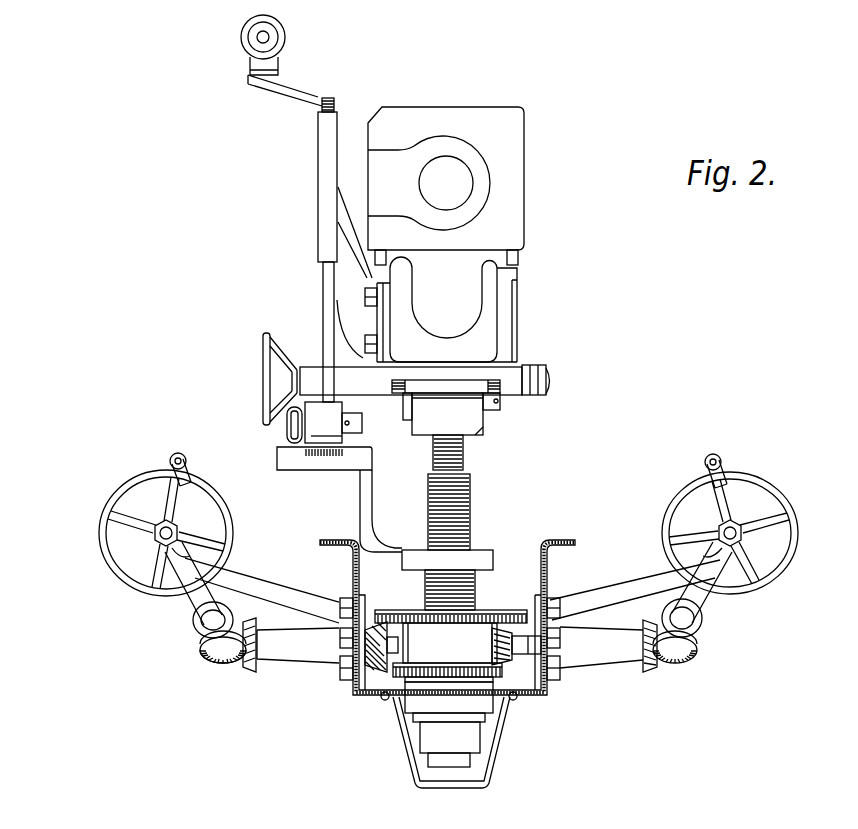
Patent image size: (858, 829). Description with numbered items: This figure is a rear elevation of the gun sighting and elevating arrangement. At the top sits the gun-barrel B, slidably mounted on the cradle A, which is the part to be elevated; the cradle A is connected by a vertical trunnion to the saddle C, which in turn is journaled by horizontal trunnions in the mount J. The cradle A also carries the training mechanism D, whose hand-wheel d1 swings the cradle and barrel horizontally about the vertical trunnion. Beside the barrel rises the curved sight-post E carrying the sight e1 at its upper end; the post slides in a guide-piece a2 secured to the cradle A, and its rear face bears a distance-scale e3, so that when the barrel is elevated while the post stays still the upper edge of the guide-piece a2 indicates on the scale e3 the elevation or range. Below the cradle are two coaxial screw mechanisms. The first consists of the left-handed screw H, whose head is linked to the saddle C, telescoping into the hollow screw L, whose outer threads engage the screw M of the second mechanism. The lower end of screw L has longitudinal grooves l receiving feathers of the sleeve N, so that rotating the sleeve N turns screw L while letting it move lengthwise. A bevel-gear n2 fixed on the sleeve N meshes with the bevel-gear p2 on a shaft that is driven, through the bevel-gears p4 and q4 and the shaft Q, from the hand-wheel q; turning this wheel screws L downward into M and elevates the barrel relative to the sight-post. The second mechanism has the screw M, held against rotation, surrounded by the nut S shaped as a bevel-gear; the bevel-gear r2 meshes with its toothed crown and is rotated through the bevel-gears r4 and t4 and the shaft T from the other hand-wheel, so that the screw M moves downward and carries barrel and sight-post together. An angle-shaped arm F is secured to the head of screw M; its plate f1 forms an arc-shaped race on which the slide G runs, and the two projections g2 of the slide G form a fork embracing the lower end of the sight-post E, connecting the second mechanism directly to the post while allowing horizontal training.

The sight e1 is at (250, 40).
The distance-scale e3 is at (335, 100).
The guide-piece a2 is at (320, 213).
The gun-barrel B is at (513, 147).
The cradle A is at (492, 316).
The sight-post E is at (320, 303).
The saddle C is at (472, 412).
The training mechanism D is at (441, 370).
The hand-wheel of the training mechanism d1 is at (272, 377).
The projections of the slide g2 is at (338, 408).
The slide G is at (342, 441).
The plate of the arm f1 is at (292, 468).
The arm F is at (370, 502).
The screw H is at (465, 459).
The hollow screw L is at (472, 517).
The screw M is at (476, 593).
The nut S is at (402, 613).
The bevel-gear r2 is at (375, 672).
The bevel-gear p2 is at (537, 673).
The bevel-gear n2 is at (485, 672).
The sleeve N is at (430, 735).
The mount J is at (550, 572).
The longitudinal grooves l is at (108, 572).
The shaft T is at (193, 610).
The bevel-gear t4 is at (215, 658).
The bevel-gear r4 is at (250, 669).
The hand-wheel q is at (798, 533).
The shaft Q is at (702, 610).
The bevel-gear q4 is at (688, 658).
The bevel-gear p4 is at (650, 672).